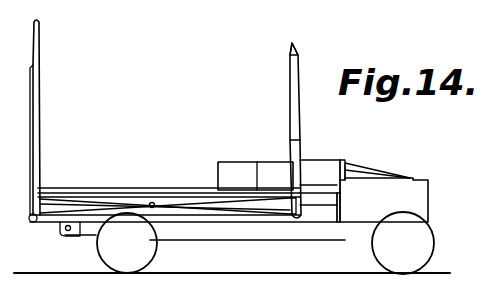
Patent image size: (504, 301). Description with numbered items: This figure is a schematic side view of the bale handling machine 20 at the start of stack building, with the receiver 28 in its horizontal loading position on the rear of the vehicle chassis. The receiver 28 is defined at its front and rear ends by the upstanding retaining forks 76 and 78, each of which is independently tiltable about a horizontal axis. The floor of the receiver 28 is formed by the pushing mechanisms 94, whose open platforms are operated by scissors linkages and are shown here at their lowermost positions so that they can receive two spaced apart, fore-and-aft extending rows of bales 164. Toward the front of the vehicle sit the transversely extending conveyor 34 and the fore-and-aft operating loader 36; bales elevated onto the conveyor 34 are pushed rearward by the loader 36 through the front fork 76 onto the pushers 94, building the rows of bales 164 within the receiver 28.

The machine 20 is at (313, 138).
The receiver 28 is at (302, 55).
The conveyor 34 is at (320, 198).
The loader 36 is at (365, 165).
The front retaining fork 76 is at (293, 85).
The rear retaining fork 78 is at (40, 82).
The pushing mechanism 94 is at (113, 190).
The bales 164 is at (238, 165).